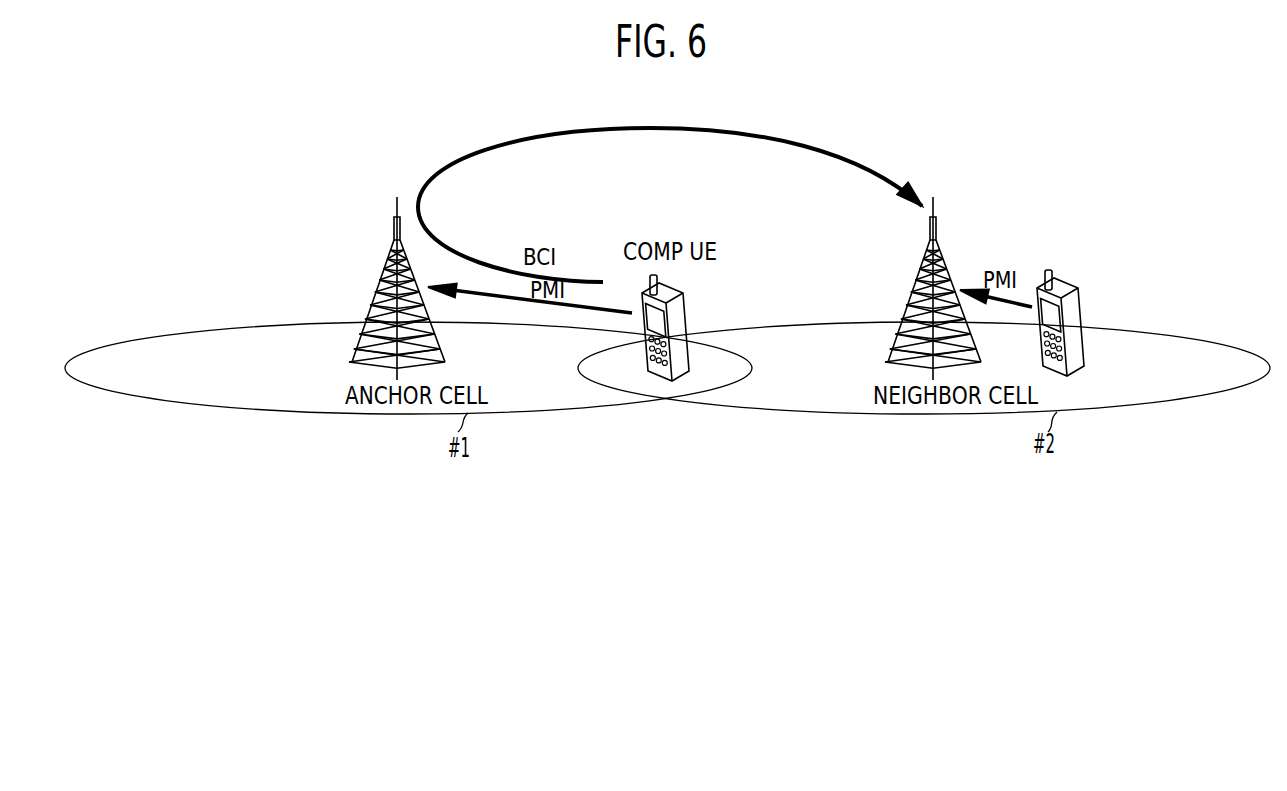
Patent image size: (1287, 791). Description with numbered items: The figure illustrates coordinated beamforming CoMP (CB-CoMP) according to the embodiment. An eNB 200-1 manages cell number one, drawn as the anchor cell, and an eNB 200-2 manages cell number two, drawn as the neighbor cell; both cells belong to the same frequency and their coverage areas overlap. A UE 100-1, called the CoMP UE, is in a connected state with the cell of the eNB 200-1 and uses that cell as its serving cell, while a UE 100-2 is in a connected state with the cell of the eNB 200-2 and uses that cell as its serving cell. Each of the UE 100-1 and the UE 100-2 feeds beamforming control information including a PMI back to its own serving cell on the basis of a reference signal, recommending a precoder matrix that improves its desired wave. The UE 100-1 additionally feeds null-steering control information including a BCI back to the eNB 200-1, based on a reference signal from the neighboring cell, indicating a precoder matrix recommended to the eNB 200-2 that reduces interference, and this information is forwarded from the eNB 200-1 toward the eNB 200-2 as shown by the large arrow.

The eNB 200-1 is at (380, 268).
The eNB 200-2 is at (940, 236).
The UE 100-1 is at (686, 378).
The UE 100-2 is at (1084, 299).